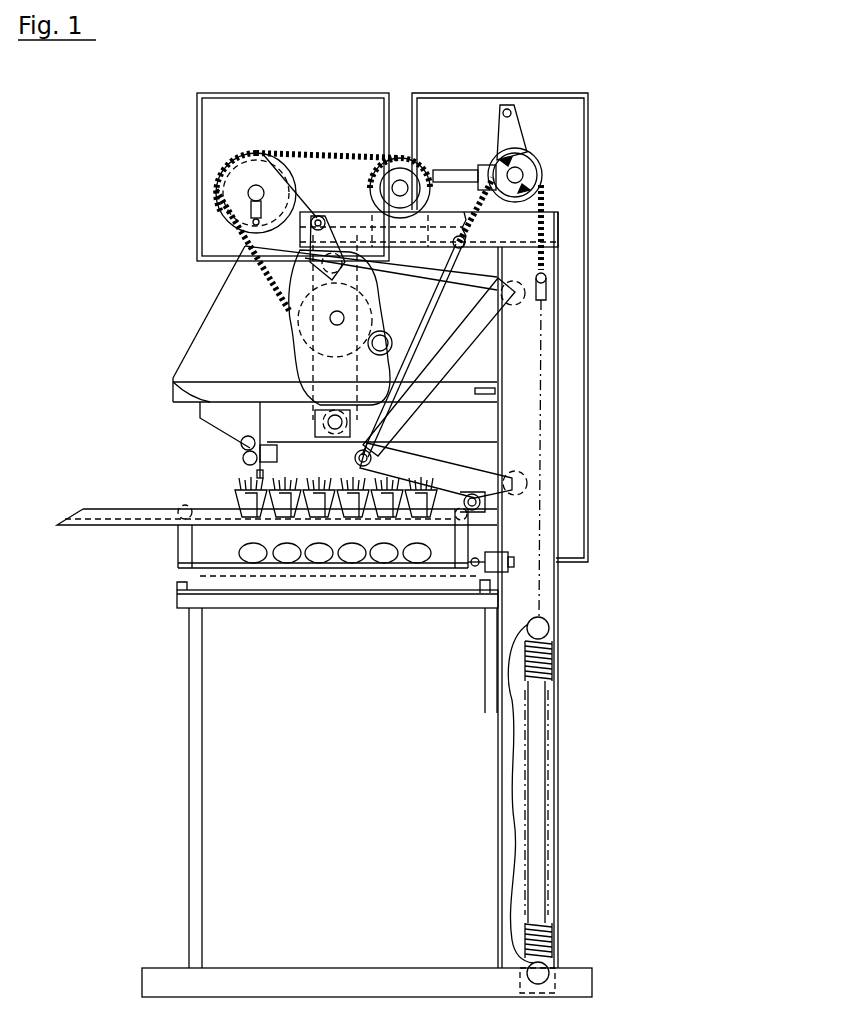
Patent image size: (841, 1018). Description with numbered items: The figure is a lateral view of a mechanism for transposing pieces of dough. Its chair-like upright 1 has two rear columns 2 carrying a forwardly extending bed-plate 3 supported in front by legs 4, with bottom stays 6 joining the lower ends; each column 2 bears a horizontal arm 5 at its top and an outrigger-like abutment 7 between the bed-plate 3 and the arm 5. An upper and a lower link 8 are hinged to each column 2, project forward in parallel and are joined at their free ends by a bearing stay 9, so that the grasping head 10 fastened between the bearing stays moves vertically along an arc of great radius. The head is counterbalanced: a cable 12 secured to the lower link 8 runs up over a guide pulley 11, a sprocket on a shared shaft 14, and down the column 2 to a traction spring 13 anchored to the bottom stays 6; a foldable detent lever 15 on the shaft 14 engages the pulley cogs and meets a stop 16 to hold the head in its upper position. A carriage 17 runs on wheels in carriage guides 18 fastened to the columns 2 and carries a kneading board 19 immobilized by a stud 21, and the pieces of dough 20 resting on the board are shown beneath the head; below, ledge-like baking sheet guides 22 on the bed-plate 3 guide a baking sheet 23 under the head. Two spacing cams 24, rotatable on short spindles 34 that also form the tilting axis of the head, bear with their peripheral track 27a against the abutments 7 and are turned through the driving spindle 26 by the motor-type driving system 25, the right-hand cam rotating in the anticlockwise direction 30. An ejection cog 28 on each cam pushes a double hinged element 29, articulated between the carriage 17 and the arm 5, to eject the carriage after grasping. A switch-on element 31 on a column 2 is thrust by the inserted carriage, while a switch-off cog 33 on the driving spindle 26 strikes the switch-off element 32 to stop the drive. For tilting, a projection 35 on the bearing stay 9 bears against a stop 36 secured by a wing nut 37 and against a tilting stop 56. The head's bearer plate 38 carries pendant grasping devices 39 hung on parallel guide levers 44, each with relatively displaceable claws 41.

The upright 1 is at (480, 640).
The column 2 is at (548, 397).
The bed-plate 3 is at (282, 612).
The leg 4 is at (195, 748).
The arm 5 is at (337, 238).
The bottom stay 6 is at (280, 976).
The abutment 7 is at (462, 428).
The link 8 is at (470, 288).
The bearing stay 9 is at (330, 395).
The grasping head 10 is at (168, 368).
The guide pulley 11 is at (530, 165).
The cable 12 is at (545, 502).
The spring 13 is at (550, 655).
The shaft 14 is at (520, 177).
The detent lever 15 is at (448, 172).
The stop 16 is at (512, 114).
The carriage 17 is at (185, 548).
The carriage guide 18 is at (108, 515).
The kneading board 19 is at (400, 558).
The egg 20 is at (292, 547).
The stud 21 is at (210, 560).
The baking sheet guide 22 is at (177, 588).
The baking sheet 23 is at (220, 577).
The spacing cam 24 is at (305, 367).
The driving system 25 is at (406, 158).
The driving spindle 26 is at (247, 190).
The peripheral track 27a is at (292, 336).
The ejection cog 28 is at (385, 340).
The double hinged element 29 is at (316, 232).
The anticlockwise direction 30 is at (228, 313).
The switch-on element 31 is at (508, 572).
The switch-off element 32 is at (258, 240).
The switch-off cog 33 is at (255, 214).
The spindle 34 is at (330, 318).
The projection 35 is at (258, 470).
The stop 36 is at (243, 448).
The wing nut 37 is at (243, 455).
The bearer plate 38 is at (205, 385).
The grasping device 39 is at (225, 500).
The claw 41 is at (358, 515).
The guide lever 44 is at (240, 487).
The tilting stop 56 is at (492, 392).